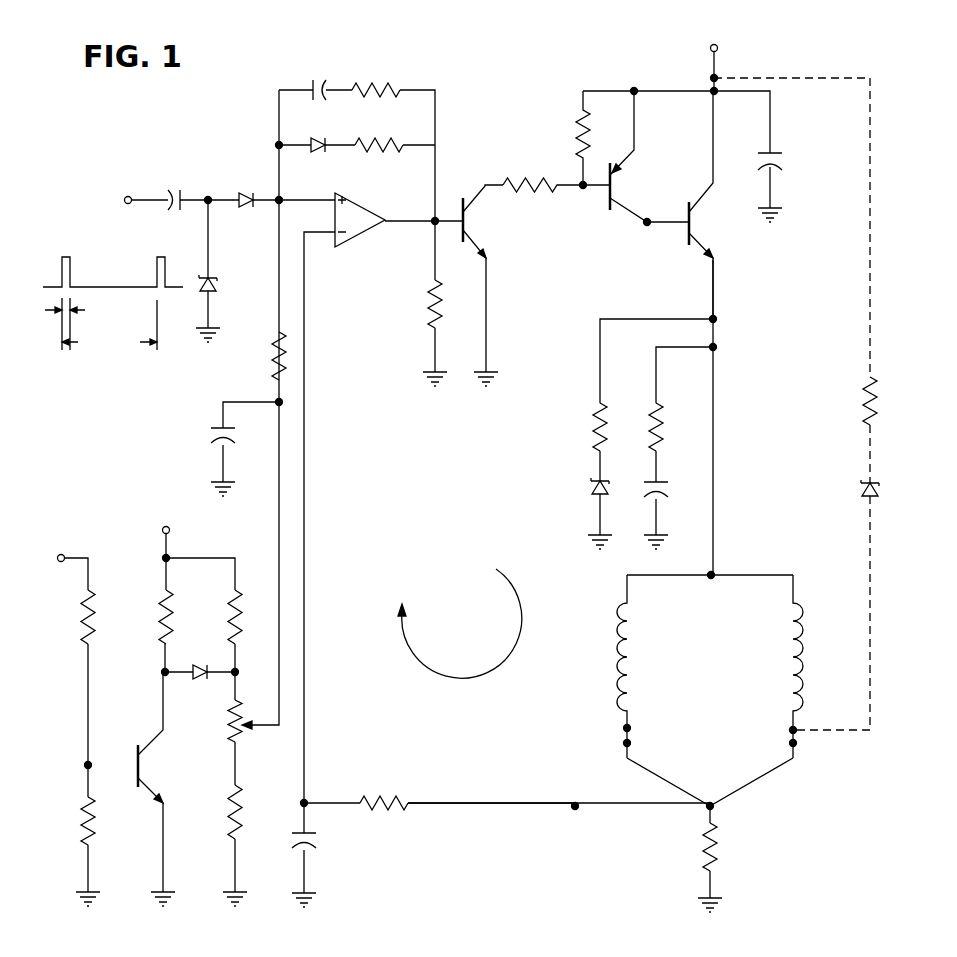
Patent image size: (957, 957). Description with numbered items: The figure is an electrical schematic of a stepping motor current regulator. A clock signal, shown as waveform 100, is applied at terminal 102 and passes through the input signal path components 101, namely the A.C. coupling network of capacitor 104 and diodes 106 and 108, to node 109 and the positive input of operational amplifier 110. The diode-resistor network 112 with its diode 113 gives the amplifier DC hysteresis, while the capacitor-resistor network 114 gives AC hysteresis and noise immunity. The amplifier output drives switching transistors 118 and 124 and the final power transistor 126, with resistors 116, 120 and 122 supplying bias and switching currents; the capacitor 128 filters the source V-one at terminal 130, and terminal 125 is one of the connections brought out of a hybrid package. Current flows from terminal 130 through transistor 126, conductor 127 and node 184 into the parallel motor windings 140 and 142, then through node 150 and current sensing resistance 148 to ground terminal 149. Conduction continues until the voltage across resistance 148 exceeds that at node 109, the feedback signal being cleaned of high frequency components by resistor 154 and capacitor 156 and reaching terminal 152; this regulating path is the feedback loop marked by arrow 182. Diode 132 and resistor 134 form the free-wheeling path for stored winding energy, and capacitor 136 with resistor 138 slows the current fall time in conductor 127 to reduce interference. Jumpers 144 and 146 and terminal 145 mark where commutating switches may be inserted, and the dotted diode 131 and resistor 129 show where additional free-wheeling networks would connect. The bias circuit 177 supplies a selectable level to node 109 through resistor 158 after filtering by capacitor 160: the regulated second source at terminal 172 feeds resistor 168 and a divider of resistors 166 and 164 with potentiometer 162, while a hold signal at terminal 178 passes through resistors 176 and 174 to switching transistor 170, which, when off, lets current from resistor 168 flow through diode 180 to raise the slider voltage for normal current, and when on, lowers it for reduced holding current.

The clock signal waveform 100 is at (75, 223).
The input signal path components 101 is at (197, 140).
The terminal 102 is at (127, 196).
The capacitor 104 is at (178, 165).
The diode 106 is at (214, 288).
The diode 108 is at (247, 192).
The node 109 is at (278, 205).
The operational amplifier 110 is at (368, 212).
The diode-resistor network 112 is at (385, 131).
The diode 113 is at (322, 152).
The capacitor-resistor network 114 is at (385, 73).
The resistor 116 is at (430, 322).
The switching transistor 118 is at (463, 197).
The resistor 120 is at (522, 180).
The resistor 122 is at (580, 125).
The switching transistor 124 is at (608, 200).
The terminal 125 is at (647, 216).
The power transistor 126 is at (687, 242).
The conductor 127 is at (715, 283).
The capacitor 128 is at (774, 152).
The resistor 129 is at (868, 383).
The terminal 130 is at (710, 50).
The diode 131 is at (866, 490).
The diode 132 is at (596, 484).
The resistor 134 is at (598, 408).
The capacitor 136 is at (653, 484).
The resistor 138 is at (655, 410).
The motor winding 140 is at (620, 610).
The motor winding 142 is at (825, 605).
The jumper 144 is at (795, 744).
The winding terminal 145 is at (790, 728).
The jumper 146 is at (624, 730).
The current sensing resistance 148 is at (705, 845).
The ground terminal 149 is at (708, 898).
The node 150 is at (713, 806).
The terminal 152 is at (573, 804).
The resistor 154 is at (364, 800).
The capacitor 156 is at (308, 832).
The resistor 158 is at (275, 362).
The capacitor 160 is at (218, 432).
The potentiometer 162 is at (232, 718).
The resistor 164 is at (232, 790).
The resistor 166 is at (234, 592).
The resistor 168 is at (163, 592).
The switching transistor 170 is at (137, 748).
The terminal 172 is at (170, 530).
The resistor 174 is at (86, 800).
The resistor 176 is at (85, 642).
The bias circuit 177 is at (127, 490).
The terminal 178 is at (63, 562).
The diode 180 is at (200, 665).
The arrow 182 is at (507, 655).
The node 184 is at (713, 573).